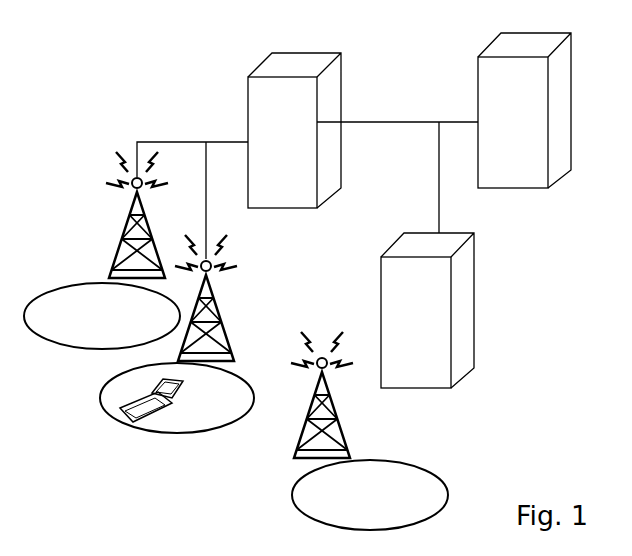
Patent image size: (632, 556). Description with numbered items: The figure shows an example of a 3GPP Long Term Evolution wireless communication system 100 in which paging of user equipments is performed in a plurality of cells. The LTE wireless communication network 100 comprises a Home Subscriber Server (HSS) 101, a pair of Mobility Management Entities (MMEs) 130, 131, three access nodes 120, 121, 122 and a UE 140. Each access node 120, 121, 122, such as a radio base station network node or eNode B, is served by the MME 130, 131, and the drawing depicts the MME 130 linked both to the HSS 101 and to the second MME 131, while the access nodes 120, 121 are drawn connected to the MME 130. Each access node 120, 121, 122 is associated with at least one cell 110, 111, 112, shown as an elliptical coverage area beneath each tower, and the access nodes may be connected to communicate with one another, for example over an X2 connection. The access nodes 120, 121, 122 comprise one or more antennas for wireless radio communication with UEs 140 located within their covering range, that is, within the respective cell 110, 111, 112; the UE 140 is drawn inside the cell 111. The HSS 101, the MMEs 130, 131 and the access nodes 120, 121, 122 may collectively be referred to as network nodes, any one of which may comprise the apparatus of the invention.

The LTE wireless communication system 100 is at (160, 52).
The Home Subscriber Server (HSS) 101 is at (543, 93).
The cell 110 is at (110, 350).
The cell 111 is at (227, 425).
The cell 112 is at (405, 462).
The access node 120 is at (118, 248).
The access node 121 is at (222, 318).
The access node 122 is at (306, 412).
The Mobility Management Entity (MME) 130 is at (301, 113).
The Mobility Management Entity (MME) 131 is at (444, 293).
The UE 140 is at (237, 405).